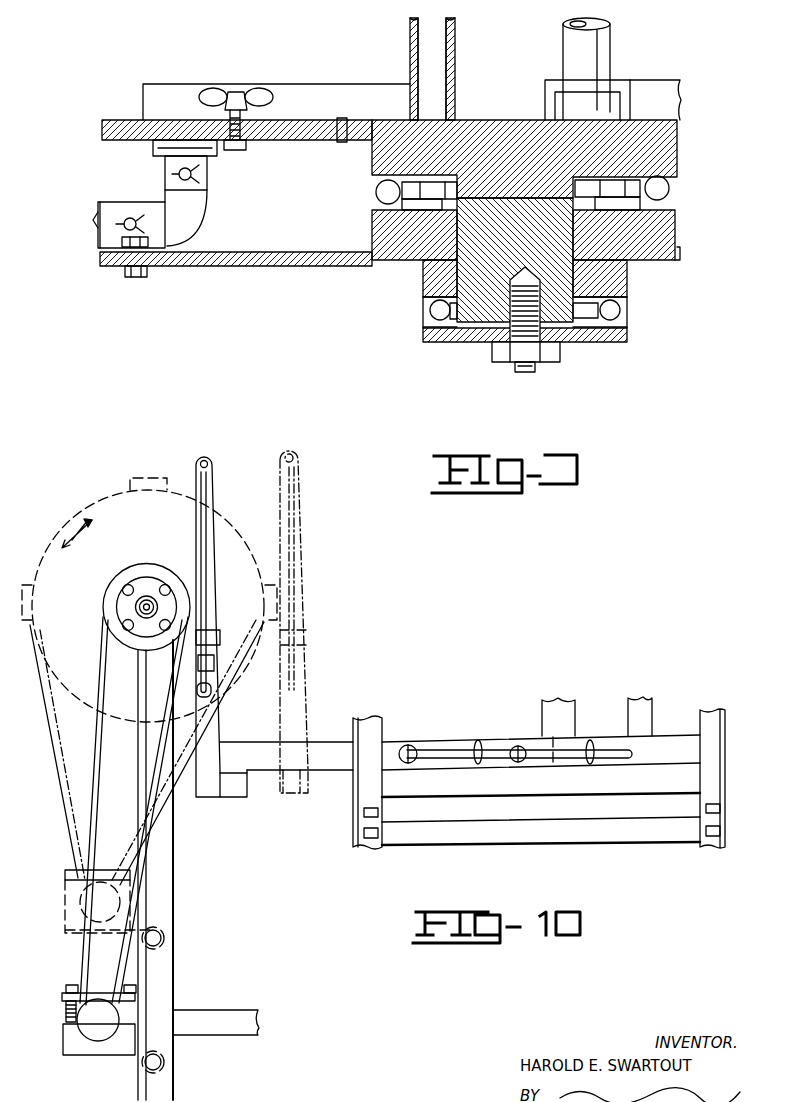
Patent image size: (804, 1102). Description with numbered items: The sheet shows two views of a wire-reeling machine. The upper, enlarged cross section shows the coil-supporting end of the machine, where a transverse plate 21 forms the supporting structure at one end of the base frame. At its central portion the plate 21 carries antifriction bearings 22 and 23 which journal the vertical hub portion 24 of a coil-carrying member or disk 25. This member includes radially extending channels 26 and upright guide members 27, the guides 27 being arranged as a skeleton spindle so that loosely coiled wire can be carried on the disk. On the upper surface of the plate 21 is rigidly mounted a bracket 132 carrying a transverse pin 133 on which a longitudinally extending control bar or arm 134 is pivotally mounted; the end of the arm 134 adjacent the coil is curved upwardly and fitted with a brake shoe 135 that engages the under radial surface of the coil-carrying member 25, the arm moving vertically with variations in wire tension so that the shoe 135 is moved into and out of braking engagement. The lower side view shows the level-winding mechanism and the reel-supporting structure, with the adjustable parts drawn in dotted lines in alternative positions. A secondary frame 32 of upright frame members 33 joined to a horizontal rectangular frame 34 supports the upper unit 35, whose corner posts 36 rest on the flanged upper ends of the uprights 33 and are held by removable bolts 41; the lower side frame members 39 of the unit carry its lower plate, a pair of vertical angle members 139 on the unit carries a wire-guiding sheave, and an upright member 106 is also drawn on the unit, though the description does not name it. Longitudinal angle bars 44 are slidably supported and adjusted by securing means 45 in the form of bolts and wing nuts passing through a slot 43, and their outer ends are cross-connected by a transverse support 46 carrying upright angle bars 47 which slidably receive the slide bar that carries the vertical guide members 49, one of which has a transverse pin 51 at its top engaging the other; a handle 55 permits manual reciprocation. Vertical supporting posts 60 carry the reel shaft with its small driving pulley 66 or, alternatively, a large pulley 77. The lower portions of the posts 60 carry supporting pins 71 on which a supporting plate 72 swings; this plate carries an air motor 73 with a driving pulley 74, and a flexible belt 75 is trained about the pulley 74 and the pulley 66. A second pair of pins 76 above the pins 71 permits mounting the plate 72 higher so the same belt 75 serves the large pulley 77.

In FIG. 9, the transverse plate 21 is at (210, 268).
In FIG. 9, the antifriction bearing 22 is at (431, 313).
In FIG. 9, the antifriction bearing 23 is at (378, 196).
In FIG. 9, the vertical hub portion 24 is at (565, 283).
In FIG. 9, the coil-carrying member 25 is at (102, 131).
In FIG. 9, the radially extending channel 26 is at (340, 92).
In FIG. 9, the upright guide member 27 is at (568, 55).
In FIG. 9, the bracket 132 is at (112, 205).
In FIG. 9, the transverse pin 133 is at (132, 216).
In FIG. 9, the control bar 134 is at (100, 236).
In FIG. 9, the brake shoe 135 is at (216, 172).
In FIG. 10, the secondary frame 32 is at (737, 841).
In FIG. 10, the upright frame member 33 is at (378, 842).
In FIG. 10, the horizontal rectangular frame 34 is at (560, 837).
In FIG. 10, the upper unit 35 is at (544, 790).
In FIG. 10, the corner post 36 is at (372, 738).
In FIG. 10, the side frame member 39 is at (623, 778).
In FIG. 10, the bolt 41 is at (368, 812).
In FIG. 10, the slot 43 is at (515, 753).
In FIG. 10, the angle bar 44 is at (330, 752).
In FIG. 10, the securing means 45 is at (410, 745).
In FIG. 10, the transverse support 46 is at (228, 790).
In FIG. 10, the upright angle bar 47 is at (239, 770).
In FIG. 10, the guide member 49 is at (225, 615).
In FIG. 10, the transverse pin 51 is at (206, 461).
In FIG. 10, the handle 55 is at (208, 630).
In FIG. 10, the supporting post 60 is at (198, 870).
In FIG. 10, the driving pulley 66 is at (146, 572).
In FIG. 10, the supporting pin 71 is at (163, 1062).
In FIG. 10, the supporting plate 72 is at (82, 1036).
In FIG. 10, the air motor 73 is at (62, 1023).
In FIG. 10, the driving pulley 74 is at (88, 1027).
In FIG. 10, the driving belt 75 is at (48, 730).
In FIG. 10, the supporting pin 76 is at (162, 938).
In FIG. 10, the pulley 77 is at (116, 508).
In FIG. 10, the post 106 is at (562, 720).
In FIG. 10, the angle member 139 is at (652, 706).